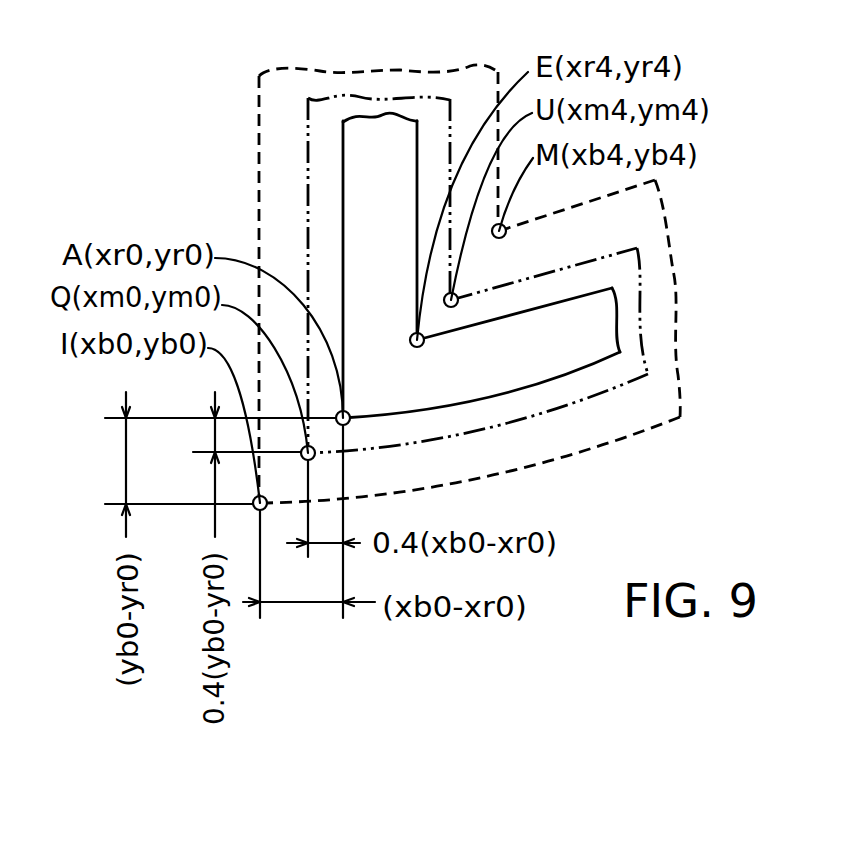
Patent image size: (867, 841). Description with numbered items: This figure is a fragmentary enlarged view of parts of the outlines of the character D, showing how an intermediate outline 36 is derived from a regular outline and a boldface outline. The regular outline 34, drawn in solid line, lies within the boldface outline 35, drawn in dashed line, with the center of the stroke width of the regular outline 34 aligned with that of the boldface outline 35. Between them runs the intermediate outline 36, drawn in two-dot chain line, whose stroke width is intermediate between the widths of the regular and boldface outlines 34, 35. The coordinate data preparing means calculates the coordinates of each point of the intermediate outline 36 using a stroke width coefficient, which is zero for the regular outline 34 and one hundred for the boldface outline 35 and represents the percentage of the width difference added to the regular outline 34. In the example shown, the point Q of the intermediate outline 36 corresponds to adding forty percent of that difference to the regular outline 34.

The regular outline 34 is at (603, 332).
The intermediate outline 36 is at (632, 365).
The boldface outline 35 is at (658, 398).